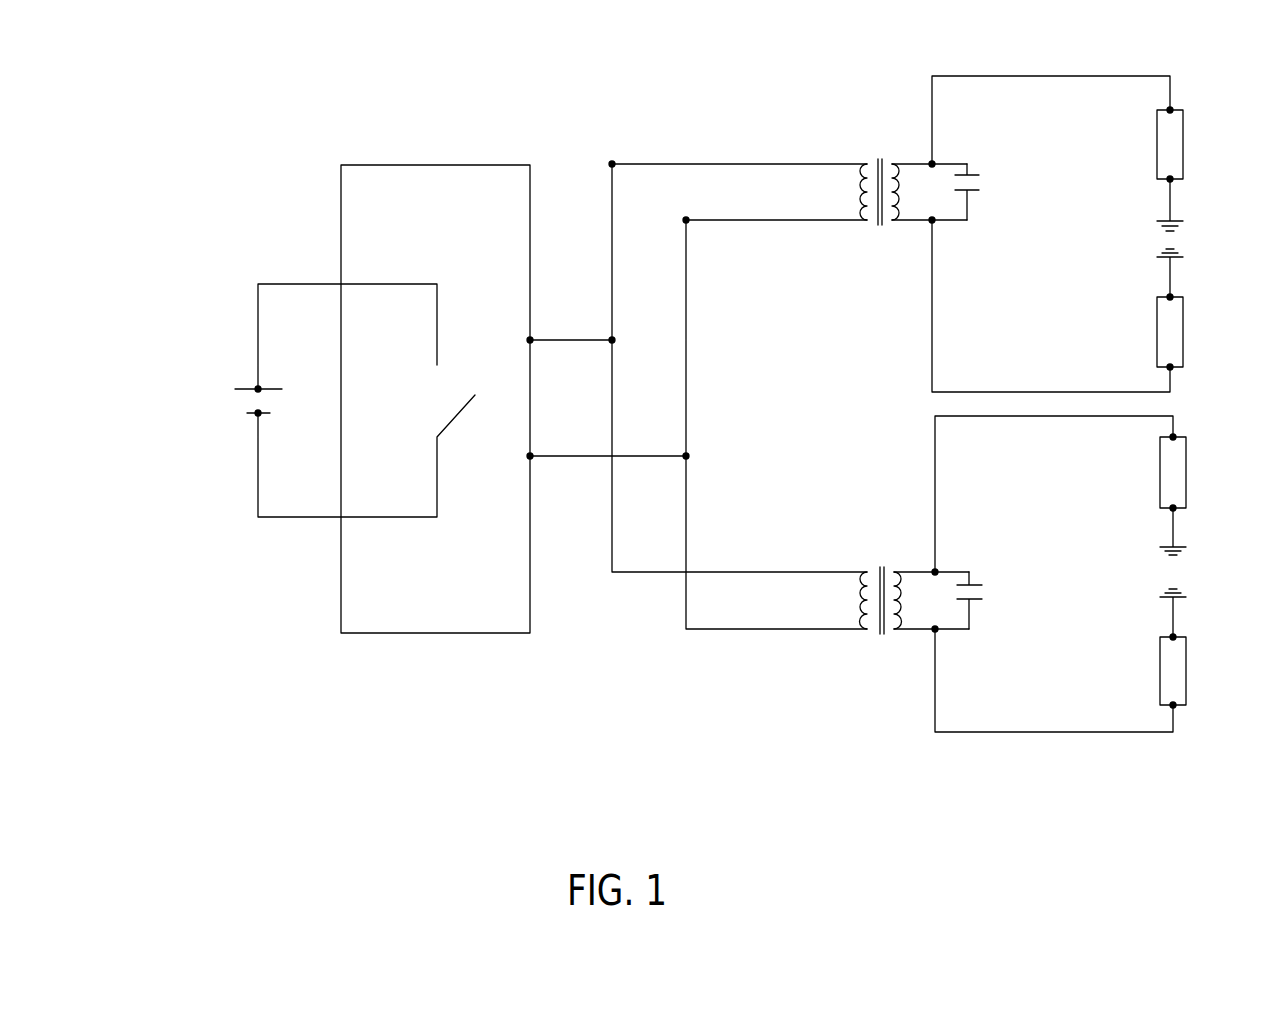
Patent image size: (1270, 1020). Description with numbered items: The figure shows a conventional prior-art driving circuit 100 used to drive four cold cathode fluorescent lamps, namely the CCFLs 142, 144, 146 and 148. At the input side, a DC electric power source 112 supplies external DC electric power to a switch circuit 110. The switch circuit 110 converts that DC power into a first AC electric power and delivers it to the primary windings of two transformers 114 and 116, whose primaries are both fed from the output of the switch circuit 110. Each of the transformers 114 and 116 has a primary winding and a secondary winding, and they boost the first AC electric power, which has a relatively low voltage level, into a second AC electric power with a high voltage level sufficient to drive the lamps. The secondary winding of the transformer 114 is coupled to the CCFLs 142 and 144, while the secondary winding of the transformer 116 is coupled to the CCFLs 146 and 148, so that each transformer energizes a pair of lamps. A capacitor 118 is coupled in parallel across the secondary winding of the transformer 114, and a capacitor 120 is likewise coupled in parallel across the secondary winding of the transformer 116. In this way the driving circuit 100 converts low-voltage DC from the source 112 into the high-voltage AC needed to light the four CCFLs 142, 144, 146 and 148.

The driving circuit 100 is at (279, 122).
The switch circuit 110 is at (363, 414).
The DC electric power source 112 is at (252, 387).
The transformer 114 is at (878, 162).
The transformer 116 is at (881, 570).
The capacitor 118 is at (974, 191).
The capacitor 120 is at (977, 600).
The CCFL 142 is at (1173, 182).
The CCFL 144 is at (1173, 370).
The CCFL 146 is at (1176, 510).
The CCFL 148 is at (1176, 708).